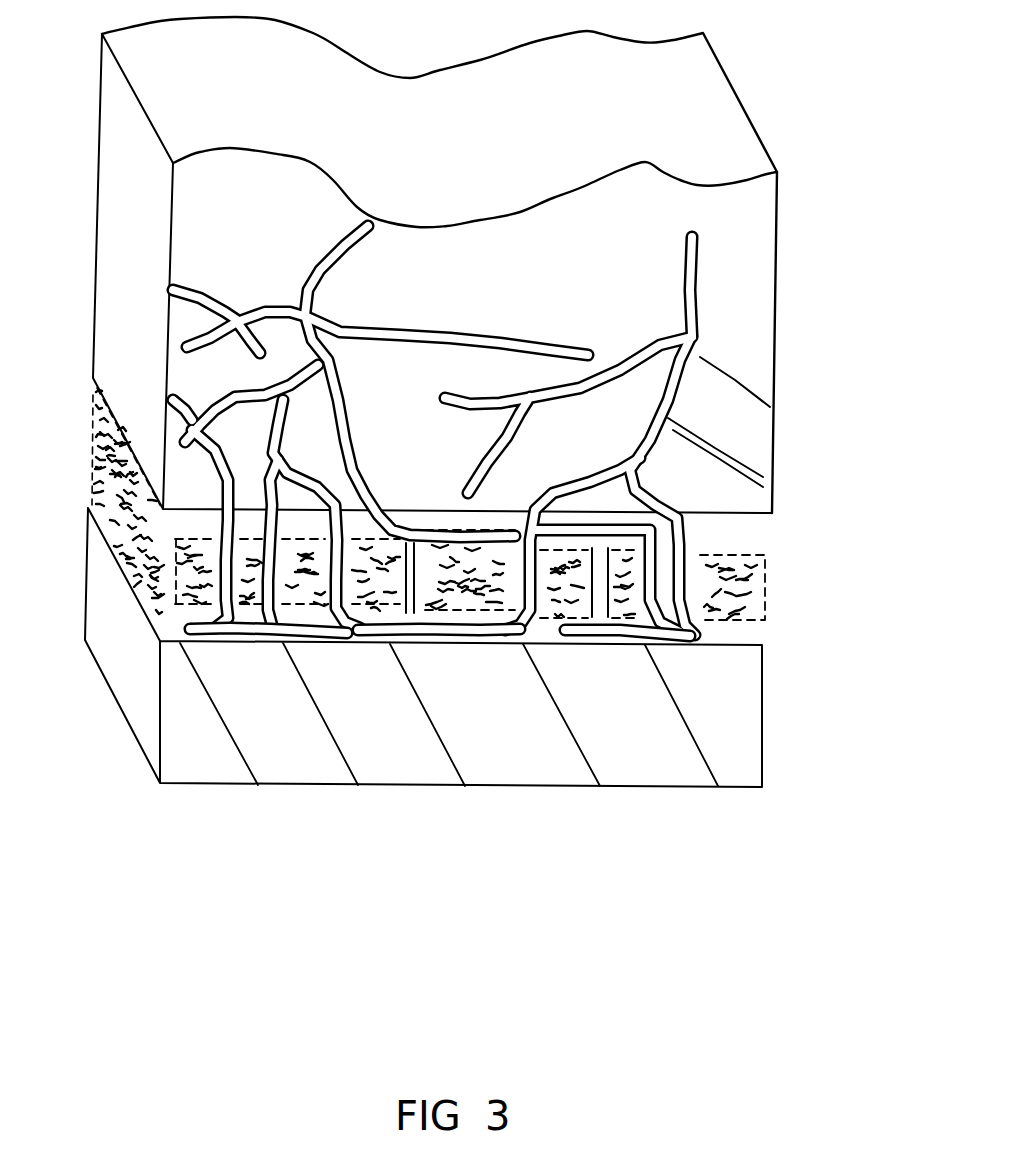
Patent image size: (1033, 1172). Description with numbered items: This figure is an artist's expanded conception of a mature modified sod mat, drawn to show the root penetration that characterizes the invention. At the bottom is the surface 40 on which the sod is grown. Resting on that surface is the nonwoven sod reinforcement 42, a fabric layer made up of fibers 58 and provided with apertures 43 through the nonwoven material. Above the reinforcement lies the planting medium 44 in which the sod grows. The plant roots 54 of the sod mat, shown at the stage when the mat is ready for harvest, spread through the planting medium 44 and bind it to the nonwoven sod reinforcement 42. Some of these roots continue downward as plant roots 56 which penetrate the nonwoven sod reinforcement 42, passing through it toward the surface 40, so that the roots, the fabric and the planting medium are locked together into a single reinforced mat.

The surface on which to grow the sod 40 is at (402, 787).
The nonwoven sod reinforcement 42 is at (767, 598).
The apertures in the nonwoven fabric 43 is at (598, 607).
The planting medium 44 is at (785, 240).
The plant roots 54 is at (685, 388).
The plant roots which penetrate the nonwoven sod reinforcement 56 is at (580, 643).
The fibers of the nonwoven sod reinforcement 58 is at (163, 577).